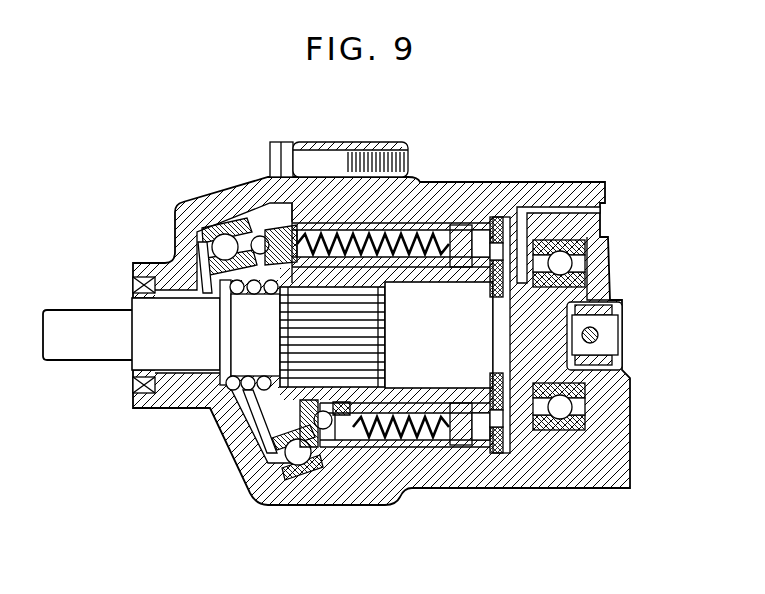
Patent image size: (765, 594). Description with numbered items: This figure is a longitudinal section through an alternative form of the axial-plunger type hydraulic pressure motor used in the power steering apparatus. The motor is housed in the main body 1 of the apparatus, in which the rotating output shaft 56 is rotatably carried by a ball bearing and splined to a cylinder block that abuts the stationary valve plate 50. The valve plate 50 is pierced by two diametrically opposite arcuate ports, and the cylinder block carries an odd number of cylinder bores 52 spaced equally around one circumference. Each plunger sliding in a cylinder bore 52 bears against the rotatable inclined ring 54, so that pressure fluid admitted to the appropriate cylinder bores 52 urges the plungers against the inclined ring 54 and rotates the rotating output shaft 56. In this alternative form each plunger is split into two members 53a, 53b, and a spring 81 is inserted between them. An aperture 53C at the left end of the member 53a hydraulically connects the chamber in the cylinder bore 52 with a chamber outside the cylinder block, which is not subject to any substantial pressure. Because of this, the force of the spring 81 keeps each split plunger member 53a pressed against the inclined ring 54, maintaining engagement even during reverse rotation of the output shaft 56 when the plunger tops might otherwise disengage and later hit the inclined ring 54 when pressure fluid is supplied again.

The main body 1 is at (562, 477).
The stationary valve plate 50 is at (504, 218).
The cylinder bores 52 is at (426, 233).
The plunger member 53a is at (262, 222).
The plunger member 53b is at (461, 217).
The aperture 53C is at (232, 188).
The inclined ring 54 is at (241, 453).
The rotating output shaft 56 is at (473, 336).
The spring 81 is at (383, 240).